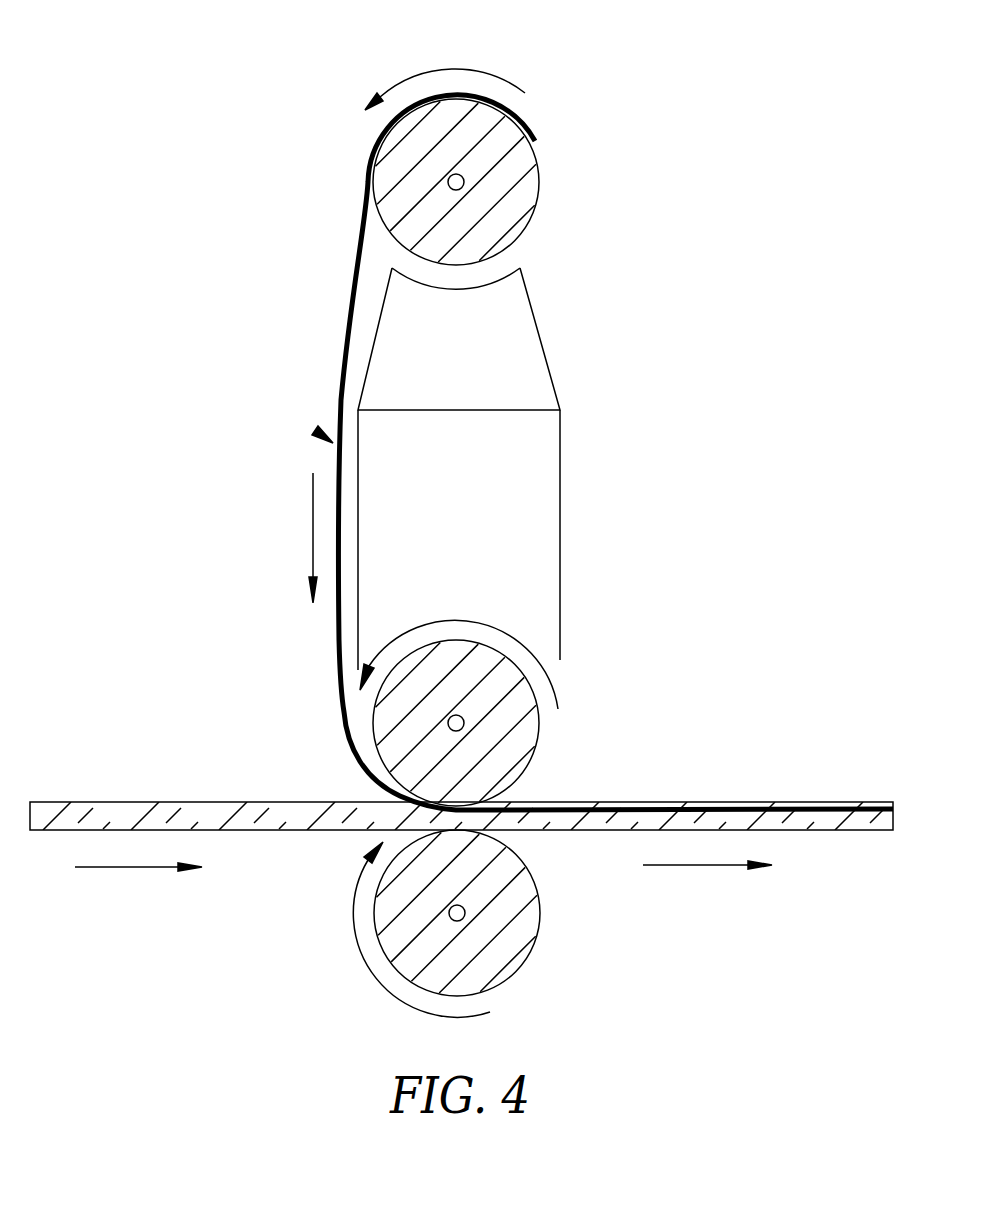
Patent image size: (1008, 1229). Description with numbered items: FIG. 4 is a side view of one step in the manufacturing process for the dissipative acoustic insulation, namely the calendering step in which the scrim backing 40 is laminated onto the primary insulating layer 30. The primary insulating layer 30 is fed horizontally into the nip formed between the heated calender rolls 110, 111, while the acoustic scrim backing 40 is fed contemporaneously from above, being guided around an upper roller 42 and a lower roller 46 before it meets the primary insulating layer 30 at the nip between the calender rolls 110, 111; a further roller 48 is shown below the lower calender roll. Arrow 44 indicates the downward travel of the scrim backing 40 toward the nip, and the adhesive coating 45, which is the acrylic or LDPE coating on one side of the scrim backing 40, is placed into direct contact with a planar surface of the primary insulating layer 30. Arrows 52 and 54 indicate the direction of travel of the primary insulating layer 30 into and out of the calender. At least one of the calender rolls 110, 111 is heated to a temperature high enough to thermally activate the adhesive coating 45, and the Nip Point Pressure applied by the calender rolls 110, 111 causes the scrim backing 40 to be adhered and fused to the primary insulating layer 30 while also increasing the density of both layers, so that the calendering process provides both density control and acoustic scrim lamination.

The primary insulating layer 30 is at (137, 808).
The scrim backing 40 is at (355, 252).
The upper guide roller 42 is at (470, 65).
The film travel direction arrow 44 is at (313, 527).
The adhesive coating 45 is at (315, 430).
The nip roller 46 is at (511, 699).
The backing roller 48 is at (465, 936).
The substrate input direction arrow 52 is at (130, 867).
The substrate output direction arrow 54 is at (690, 866).
The calender roll 110 is at (515, 770).
The calender roll 111 is at (530, 922).